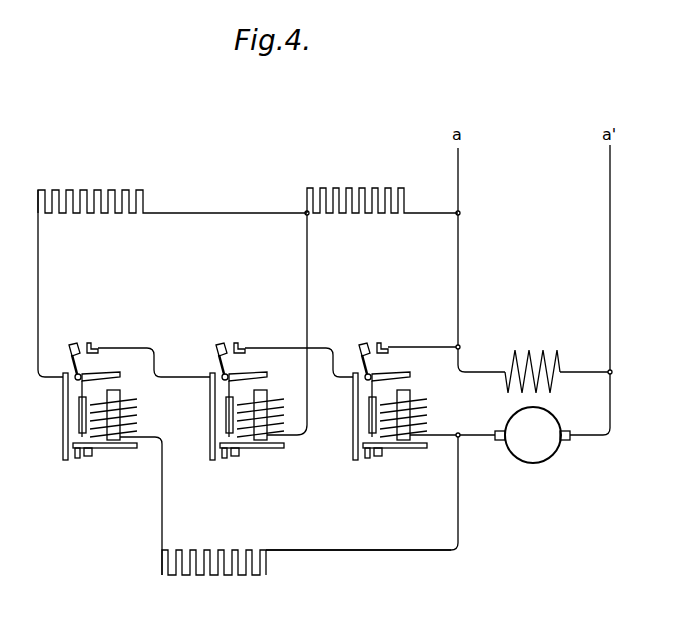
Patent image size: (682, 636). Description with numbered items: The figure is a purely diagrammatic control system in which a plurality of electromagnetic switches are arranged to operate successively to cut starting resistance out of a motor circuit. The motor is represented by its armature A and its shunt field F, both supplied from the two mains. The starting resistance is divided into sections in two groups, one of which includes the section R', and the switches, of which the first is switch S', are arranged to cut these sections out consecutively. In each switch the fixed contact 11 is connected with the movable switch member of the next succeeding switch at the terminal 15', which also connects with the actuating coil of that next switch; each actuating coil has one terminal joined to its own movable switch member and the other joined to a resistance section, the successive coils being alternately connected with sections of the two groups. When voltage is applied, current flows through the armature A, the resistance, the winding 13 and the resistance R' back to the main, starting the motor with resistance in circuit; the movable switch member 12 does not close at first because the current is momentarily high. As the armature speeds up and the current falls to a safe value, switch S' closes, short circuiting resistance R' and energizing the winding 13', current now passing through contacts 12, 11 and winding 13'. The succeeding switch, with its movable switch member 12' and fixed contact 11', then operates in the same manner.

The fixed contact 11 is at (103, 339).
The movable switch member 12 is at (63, 354).
The actuating coil 13 is at (124, 415).
The terminal 15' is at (97, 368).
The first electromagnetic switch S' is at (100, 423).
The fixed contact 11' is at (253, 339).
The movable switch member 12' is at (211, 354).
The actuating coil 13' is at (270, 413).
The starting resistance section R' is at (172, 191).
The shunt field F is at (532, 360).
The armature A is at (532, 435).